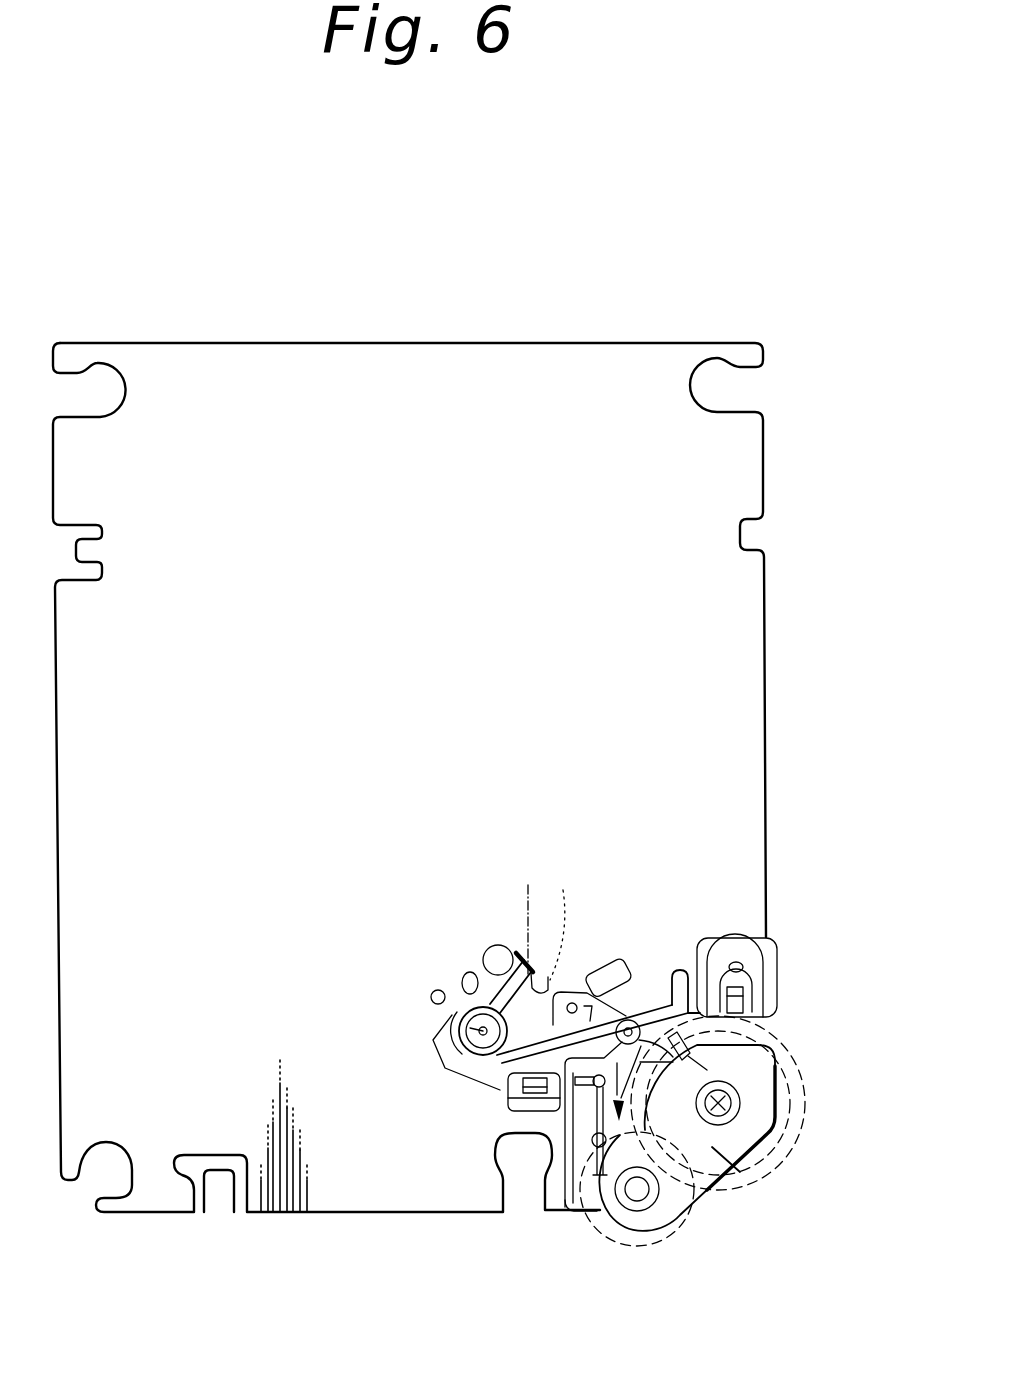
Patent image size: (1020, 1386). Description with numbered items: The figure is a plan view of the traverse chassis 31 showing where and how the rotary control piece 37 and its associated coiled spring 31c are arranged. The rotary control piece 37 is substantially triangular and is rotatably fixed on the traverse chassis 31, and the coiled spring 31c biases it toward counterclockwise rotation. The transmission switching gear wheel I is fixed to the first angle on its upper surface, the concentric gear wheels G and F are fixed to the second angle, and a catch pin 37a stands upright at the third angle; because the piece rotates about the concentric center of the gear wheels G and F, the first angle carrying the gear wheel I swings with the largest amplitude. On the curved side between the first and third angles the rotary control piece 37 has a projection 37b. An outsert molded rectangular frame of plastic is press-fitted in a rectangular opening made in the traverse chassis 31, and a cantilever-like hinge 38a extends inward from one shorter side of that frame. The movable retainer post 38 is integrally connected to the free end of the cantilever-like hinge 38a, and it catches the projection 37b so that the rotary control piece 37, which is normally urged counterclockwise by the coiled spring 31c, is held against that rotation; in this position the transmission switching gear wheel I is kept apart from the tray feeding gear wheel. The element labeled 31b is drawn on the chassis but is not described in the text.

The traverse chassis 31 is at (296, 1212).
The pulley 31b is at (459, 1029).
The coiled spring 31c is at (497, 1090).
The rotary control piece 37 is at (736, 1166).
The catch pin 37a is at (632, 1005).
The projection 37b is at (660, 1055).
The movable retainer post 38 is at (575, 1082).
The cantilever-like hinge 38a is at (594, 1086).
The gear wheel F is at (806, 1104).
The gear wheel G is at (780, 1142).
The transmission switching gear wheel I is at (672, 1242).